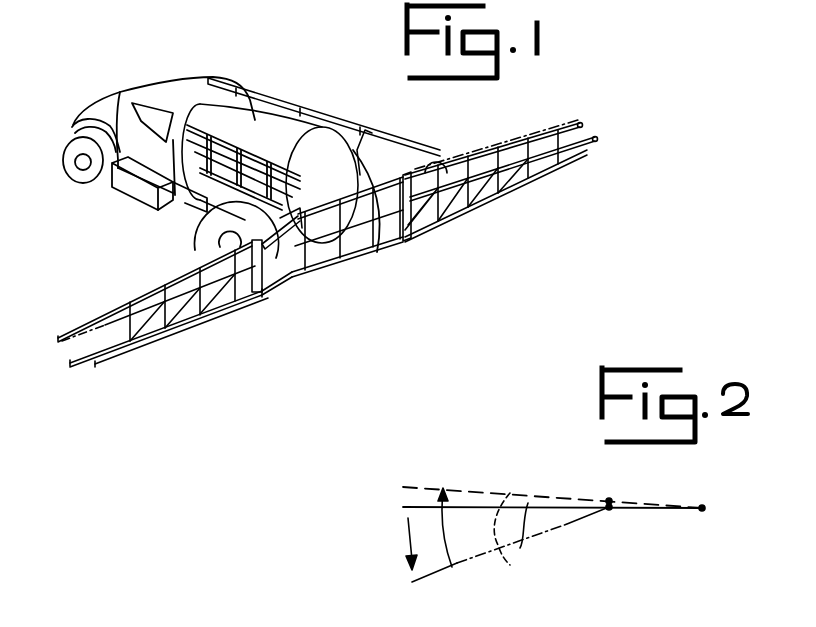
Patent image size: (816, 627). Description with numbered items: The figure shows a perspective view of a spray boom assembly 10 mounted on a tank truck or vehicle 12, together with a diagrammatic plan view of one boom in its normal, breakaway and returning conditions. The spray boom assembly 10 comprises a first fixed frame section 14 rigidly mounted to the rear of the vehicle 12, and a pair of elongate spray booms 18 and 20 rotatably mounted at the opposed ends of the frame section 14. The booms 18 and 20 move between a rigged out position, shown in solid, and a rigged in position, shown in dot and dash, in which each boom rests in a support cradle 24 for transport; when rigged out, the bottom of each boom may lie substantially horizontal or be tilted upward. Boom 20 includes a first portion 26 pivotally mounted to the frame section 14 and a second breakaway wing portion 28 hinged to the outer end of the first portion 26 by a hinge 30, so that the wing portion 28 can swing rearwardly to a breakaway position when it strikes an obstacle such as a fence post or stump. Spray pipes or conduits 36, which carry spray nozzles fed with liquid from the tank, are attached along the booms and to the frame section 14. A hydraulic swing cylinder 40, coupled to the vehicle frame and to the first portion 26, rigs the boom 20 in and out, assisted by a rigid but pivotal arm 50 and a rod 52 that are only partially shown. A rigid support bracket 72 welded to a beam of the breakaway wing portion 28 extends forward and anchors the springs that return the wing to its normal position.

In FIG. 1, the spray boom assembly 10 is at (403, 158).
In FIG. 1, the tank truck or vehicle 12 is at (267, 117).
In FIG. 1, the first fixed frame section 14 is at (357, 150).
In FIG. 1, the spray boom 18 is at (353, 130).
In FIG. 1, the spray boom 20 is at (250, 135).
In FIG. 2, the spray boom 20 is at (585, 526).
In FIG. 1, the support cradle 24 is at (212, 80).
In FIG. 1, the first portion 26 is at (225, 265).
In FIG. 2, the first portion 26 is at (645, 509).
In FIG. 1, the breakaway wing portion 28 is at (90, 360).
In FIG. 2, the breakaway wing portion 28 is at (514, 539).
In FIG. 2, the hinge 30 is at (609, 510).
In FIG. 1, the spray pipes or conduits 36 is at (350, 267).
In FIG. 1, the hydraulic swing cylinder 40 is at (280, 220).
In FIG. 1, the pivotal arm 50 is at (390, 235).
In FIG. 1, the rod 52 is at (452, 168).
In FIG. 1, the rigid support bracket 72 is at (410, 172).